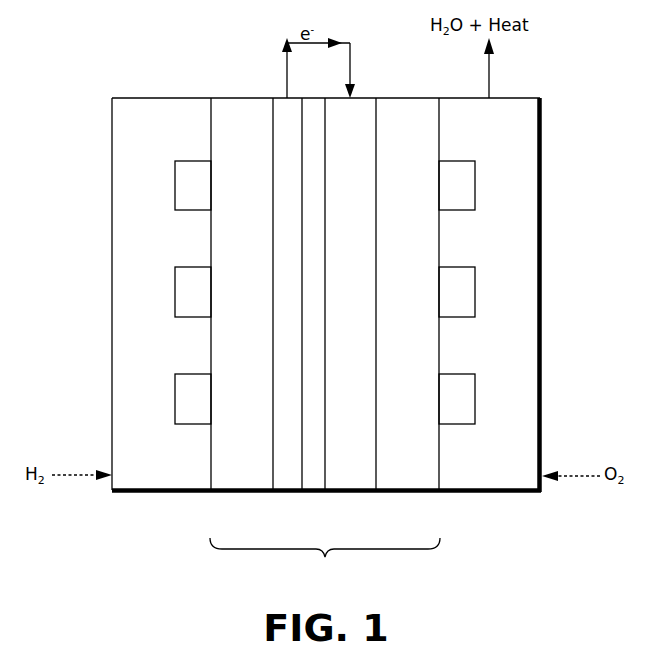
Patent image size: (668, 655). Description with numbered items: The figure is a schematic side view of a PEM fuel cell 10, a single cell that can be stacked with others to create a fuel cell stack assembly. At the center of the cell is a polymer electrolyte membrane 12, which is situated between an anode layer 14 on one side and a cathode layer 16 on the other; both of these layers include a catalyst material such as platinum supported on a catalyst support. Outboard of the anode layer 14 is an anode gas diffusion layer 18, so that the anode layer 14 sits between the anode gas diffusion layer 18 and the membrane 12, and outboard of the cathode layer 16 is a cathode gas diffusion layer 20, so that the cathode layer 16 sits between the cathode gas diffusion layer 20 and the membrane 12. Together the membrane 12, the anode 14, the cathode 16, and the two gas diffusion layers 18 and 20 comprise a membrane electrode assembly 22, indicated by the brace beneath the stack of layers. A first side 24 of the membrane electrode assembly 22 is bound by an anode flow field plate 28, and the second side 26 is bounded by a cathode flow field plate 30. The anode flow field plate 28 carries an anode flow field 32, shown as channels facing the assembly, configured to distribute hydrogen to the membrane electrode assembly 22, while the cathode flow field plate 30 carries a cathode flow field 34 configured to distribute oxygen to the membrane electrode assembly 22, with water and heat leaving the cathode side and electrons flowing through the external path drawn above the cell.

The PEM fuel cell 10 is at (597, 230).
The polymer electrolyte membrane 12 is at (305, 98).
The anode layer 14 is at (287, 493).
The cathode layer 16 is at (351, 493).
The anode gas diffusion layer 18 is at (243, 98).
The cathode gas diffusion layer 20 is at (408, 98).
The membrane electrode assembly 22 is at (325, 562).
The first side 24 is at (210, 98).
The second side 26 is at (439, 98).
The anode flow field plate 28 is at (147, 98).
The cathode flow field plate 30 is at (524, 98).
The anode flow field 32 is at (175, 185).
The cathode flow field 34 is at (475, 292).